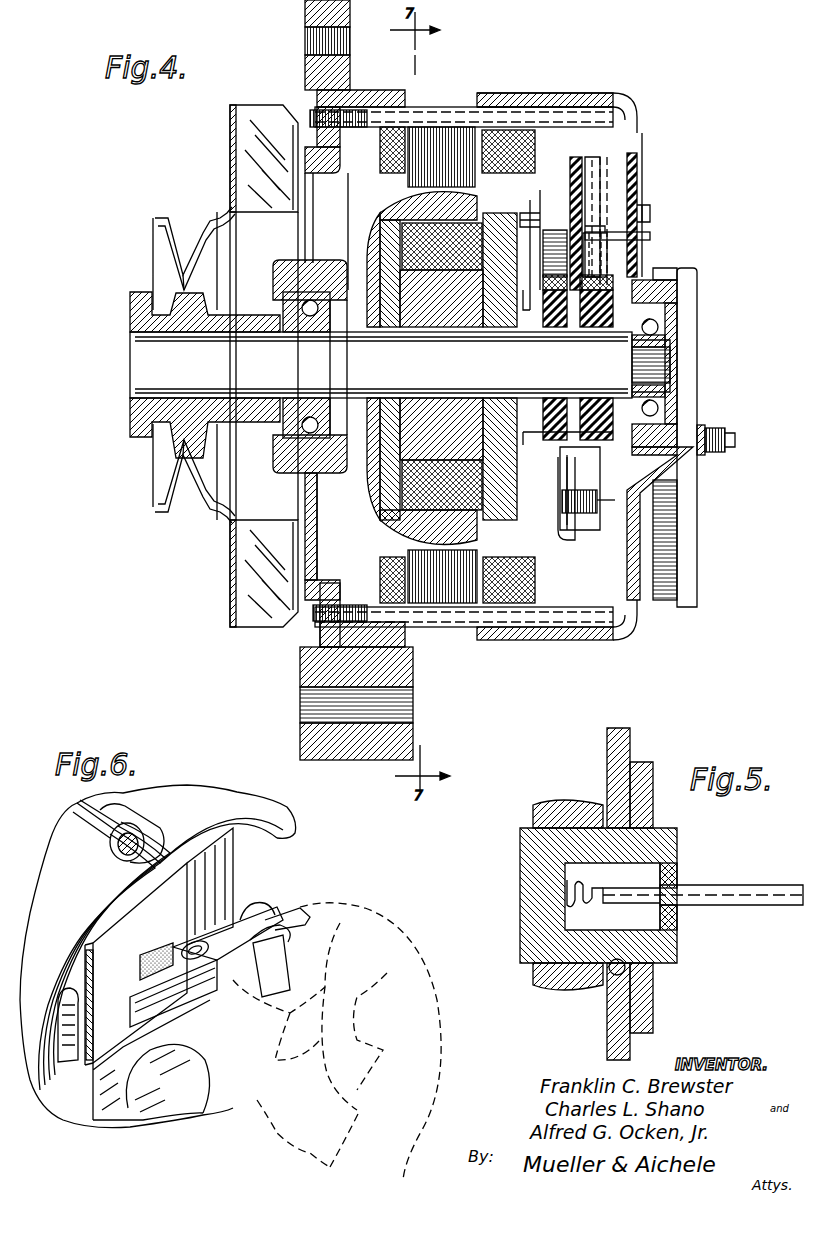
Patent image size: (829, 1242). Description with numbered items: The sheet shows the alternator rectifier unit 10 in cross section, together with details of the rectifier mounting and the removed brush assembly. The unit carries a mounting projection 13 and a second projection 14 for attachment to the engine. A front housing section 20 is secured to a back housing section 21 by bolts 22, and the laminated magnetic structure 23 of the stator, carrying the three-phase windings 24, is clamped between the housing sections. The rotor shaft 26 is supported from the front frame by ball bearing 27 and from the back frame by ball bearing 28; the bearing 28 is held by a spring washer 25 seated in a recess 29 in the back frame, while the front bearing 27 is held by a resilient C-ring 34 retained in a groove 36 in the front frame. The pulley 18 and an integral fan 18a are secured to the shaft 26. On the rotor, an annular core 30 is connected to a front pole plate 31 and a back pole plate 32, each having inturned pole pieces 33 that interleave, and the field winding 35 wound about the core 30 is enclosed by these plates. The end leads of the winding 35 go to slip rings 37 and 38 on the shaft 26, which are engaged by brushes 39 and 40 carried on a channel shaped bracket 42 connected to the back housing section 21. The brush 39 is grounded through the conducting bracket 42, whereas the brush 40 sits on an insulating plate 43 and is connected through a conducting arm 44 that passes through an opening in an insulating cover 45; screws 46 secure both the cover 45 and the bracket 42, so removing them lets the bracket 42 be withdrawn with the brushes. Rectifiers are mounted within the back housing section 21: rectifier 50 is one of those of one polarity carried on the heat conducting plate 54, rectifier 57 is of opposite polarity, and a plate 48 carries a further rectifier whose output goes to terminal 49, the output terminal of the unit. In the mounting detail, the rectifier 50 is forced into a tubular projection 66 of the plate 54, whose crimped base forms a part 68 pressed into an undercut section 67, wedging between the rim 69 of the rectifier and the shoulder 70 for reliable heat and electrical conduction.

In FIG. 4, the alternator rectifier unit 10 is at (527, 79).
In FIG. 4, the mounting projection 13 is at (300, 740).
In FIG. 4, the second projection 14 is at (305, 10).
In FIG. 4, the pulley 18 is at (170, 220).
In FIG. 4, the fan 18a is at (240, 627).
In FIG. 4, the front housing section 20 is at (305, 68).
In FIG. 4, the back housing section 21 is at (605, 93).
In FIG. 6, the back housing section 21 is at (240, 835).
In FIG. 4, the bolts 22 is at (440, 107).
In FIG. 4, the laminated magnetic structure 23 is at (445, 603).
In FIG. 4, the windings 24 is at (520, 627).
In FIG. 4, the spring washer 25 is at (660, 290).
In FIG. 4, the shaft 26 is at (130, 385).
In FIG. 4, the ball bearing 27 is at (290, 300).
In FIG. 4, the ball bearing 28 is at (670, 336).
In FIG. 4, the recess 29 is at (658, 310).
In FIG. 4, the annular core 30 is at (380, 505).
In FIG. 4, the front pole plate 31 is at (367, 235).
In FIG. 4, the back pole plate 32 is at (528, 220).
In FIG. 4, the pole pieces 33 is at (440, 223).
In FIG. 4, the resilient C-ring 34 is at (305, 490).
In FIG. 4, the winding 35 is at (450, 505).
In FIG. 4, the groove 36 is at (345, 280).
In FIG. 4, the slip ring 37 is at (547, 440).
In FIG. 4, the slip ring 38 is at (600, 445).
In FIG. 4, the brush 39 is at (553, 240).
In FIG. 6, the brush 39 is at (148, 958).
In FIG. 4, the brush 40 is at (590, 233).
In FIG. 4, the channel shaped bracket 42 is at (570, 180).
In FIG. 6, the channel shaped bracket 42 is at (285, 905).
In FIG. 4, the insulating plate 43 is at (592, 175).
In FIG. 4, the conducting arm 44 is at (650, 236).
In FIG. 6, the conducting arm 44 is at (285, 1005).
In FIG. 4, the insulating cover 45 is at (637, 172).
In FIG. 4, the screws 46 is at (650, 210).
In FIG. 4, the plate 48 is at (697, 571).
In FIG. 4, the terminal 49 is at (725, 433).
In FIG. 5, the rectifier 50 is at (520, 872).
In FIG. 4, the heat conducting plate 54 is at (565, 545).
In FIG. 5, the heat conducting plate 54 is at (607, 1045).
In FIG. 4, the rectifier 57 is at (588, 513).
In FIG. 5, the tubular projection 66 is at (540, 985).
In FIG. 5, the undercut section 67 is at (628, 983).
In FIG. 5, the crimped part 68 is at (603, 970).
In FIG. 5, the rim 69 is at (645, 762).
In FIG. 5, the shoulder 70 is at (585, 962).